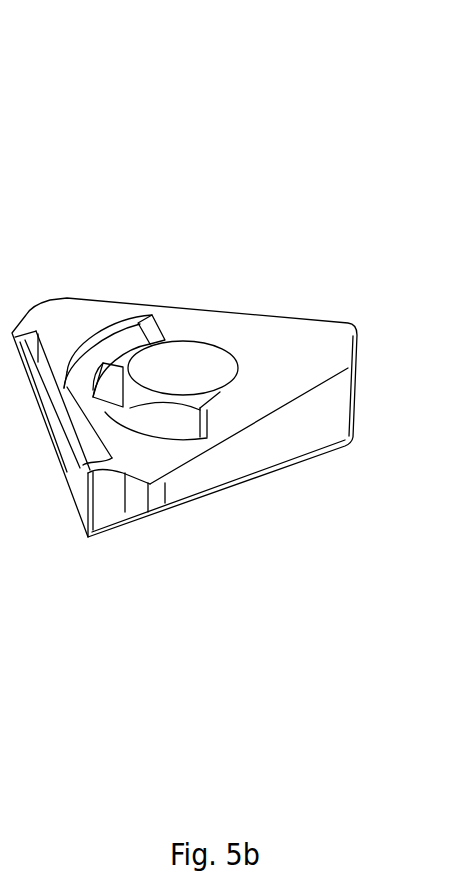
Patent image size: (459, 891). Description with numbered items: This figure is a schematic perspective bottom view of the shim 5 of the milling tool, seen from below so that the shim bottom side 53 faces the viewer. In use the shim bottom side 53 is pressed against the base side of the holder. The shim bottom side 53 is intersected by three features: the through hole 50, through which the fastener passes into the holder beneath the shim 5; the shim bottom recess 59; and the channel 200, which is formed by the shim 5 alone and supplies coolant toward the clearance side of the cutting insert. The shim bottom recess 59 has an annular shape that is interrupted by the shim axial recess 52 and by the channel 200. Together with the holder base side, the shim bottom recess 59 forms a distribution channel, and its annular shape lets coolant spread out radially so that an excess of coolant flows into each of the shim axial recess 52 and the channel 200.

The shim 5 is at (288, 340).
The through hole 50 is at (192, 393).
The shim axial recess 52 is at (113, 402).
The shim bottom side 53 is at (217, 325).
The shim bottom recess 59 is at (140, 343).
The channel 200 is at (42, 352).